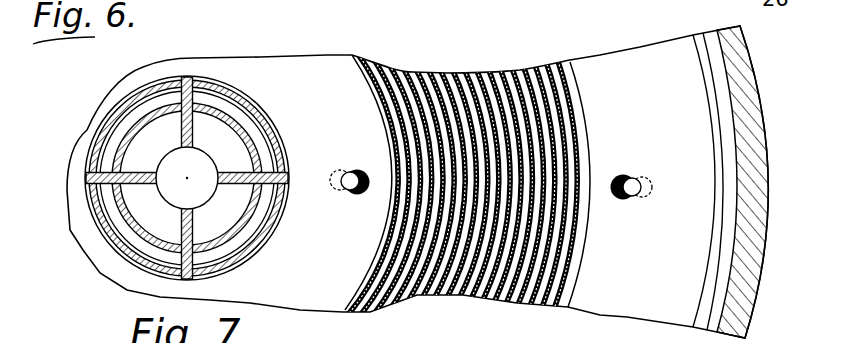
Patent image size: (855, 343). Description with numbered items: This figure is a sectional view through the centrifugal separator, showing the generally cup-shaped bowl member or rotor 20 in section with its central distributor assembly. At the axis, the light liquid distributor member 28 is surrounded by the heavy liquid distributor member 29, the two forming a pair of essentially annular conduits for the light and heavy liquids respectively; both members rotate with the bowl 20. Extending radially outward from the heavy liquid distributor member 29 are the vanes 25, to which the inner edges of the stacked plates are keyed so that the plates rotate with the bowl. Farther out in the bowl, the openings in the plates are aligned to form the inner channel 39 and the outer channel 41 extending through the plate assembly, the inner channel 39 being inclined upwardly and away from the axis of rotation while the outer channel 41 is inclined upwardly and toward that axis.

The bowl member or rotor 20 is at (747, 309).
The vanes 25 is at (288, 174).
The light liquid distributor member 28 is at (248, 139).
The heavy liquid distributor member 29 is at (263, 114).
The inner channel 39 is at (350, 186).
The outer channel 41 is at (631, 191).